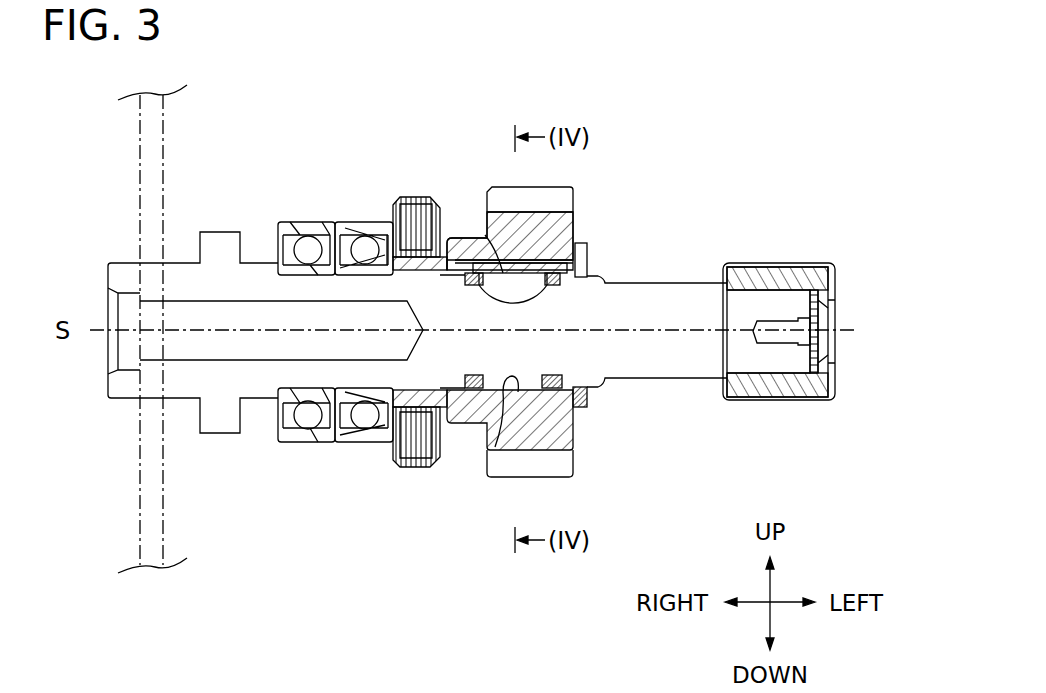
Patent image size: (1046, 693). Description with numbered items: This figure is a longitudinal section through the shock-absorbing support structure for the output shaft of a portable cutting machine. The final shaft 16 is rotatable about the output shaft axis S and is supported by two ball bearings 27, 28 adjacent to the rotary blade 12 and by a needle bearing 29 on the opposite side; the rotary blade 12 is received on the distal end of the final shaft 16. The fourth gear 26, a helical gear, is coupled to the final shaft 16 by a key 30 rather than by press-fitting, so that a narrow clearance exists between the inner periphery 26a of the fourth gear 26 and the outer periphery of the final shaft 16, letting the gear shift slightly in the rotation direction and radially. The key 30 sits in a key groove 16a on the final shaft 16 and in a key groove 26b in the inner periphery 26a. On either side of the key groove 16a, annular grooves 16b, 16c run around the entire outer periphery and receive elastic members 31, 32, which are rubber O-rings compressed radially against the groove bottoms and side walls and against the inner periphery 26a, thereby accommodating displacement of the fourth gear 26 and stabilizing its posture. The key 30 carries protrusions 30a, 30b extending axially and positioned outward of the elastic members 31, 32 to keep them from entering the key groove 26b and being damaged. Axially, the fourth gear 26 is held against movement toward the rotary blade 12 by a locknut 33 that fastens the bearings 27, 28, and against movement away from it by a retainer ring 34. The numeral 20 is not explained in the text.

The rotary blade 12 is at (140, 490).
The final shaft 16 is at (697, 305).
The key groove 16a is at (556, 288).
The annular groove 16b is at (468, 408).
The annular groove 16c is at (575, 475).
The gear unit 20 is at (546, 306).
The fourth gear 26 is at (575, 223).
The inner periphery 26a is at (497, 432).
The key groove 26b is at (387, 252).
The bearing 27 is at (305, 422).
The bearing 28 is at (365, 422).
The bearing 29 is at (790, 393).
The key 30 is at (503, 260).
The protrusion 30a is at (458, 258).
The protrusion 30b is at (593, 270).
The elastic member 31 is at (333, 262).
The elastic member 32 is at (590, 284).
The locknut 33 is at (412, 462).
The retainer ring 34 is at (588, 403).